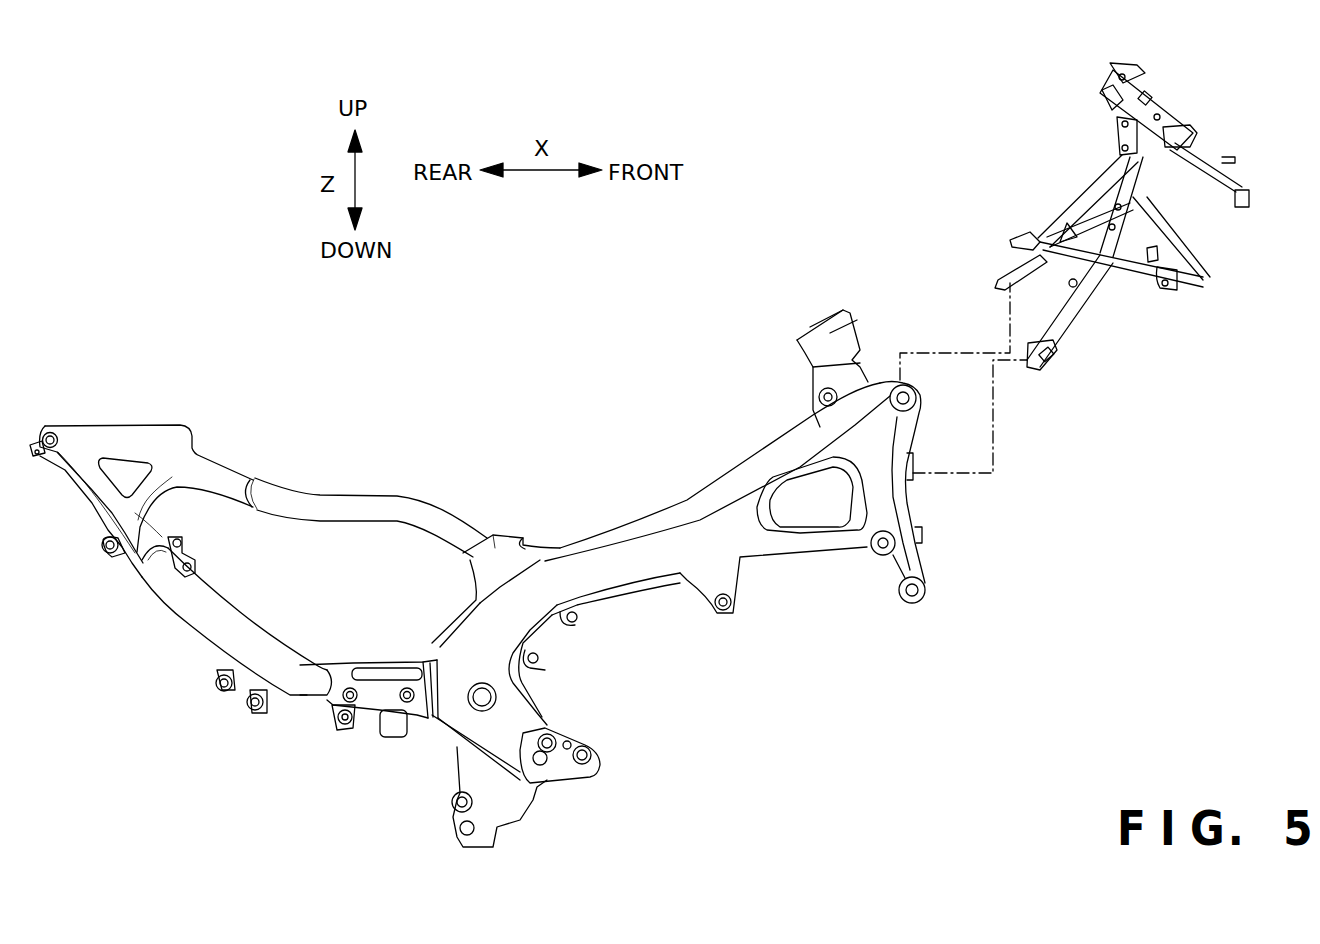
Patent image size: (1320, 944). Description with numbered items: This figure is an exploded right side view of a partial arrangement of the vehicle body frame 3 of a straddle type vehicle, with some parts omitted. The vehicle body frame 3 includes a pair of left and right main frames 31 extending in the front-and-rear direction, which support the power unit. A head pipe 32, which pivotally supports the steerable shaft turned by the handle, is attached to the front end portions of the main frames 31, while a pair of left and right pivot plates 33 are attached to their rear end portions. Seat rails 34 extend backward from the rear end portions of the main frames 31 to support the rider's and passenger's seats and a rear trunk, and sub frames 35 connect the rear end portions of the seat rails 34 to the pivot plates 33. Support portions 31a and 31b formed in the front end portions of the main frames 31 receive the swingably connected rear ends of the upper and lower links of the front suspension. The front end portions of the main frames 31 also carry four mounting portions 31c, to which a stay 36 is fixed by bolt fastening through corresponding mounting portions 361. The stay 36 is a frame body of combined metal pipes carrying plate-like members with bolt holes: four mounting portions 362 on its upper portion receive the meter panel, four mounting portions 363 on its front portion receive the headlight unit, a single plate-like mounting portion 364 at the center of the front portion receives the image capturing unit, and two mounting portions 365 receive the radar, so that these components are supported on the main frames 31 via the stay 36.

The vehicle body frame 3 is at (972, 650).
The main frame 31 is at (706, 488).
The support portion 31a is at (913, 405).
The support portion 31b is at (878, 555).
The mounting portion 31c is at (899, 380).
The head pipe 32 is at (800, 322).
The pivot plate 33 is at (510, 697).
The seat rail 34 is at (352, 495).
The sub frame 35 is at (205, 647).
The stay 36 is at (1135, 352).
The mounting portion 361 is at (1003, 285).
The mounting portion 362 is at (1103, 72).
The mounting portion 363 is at (1167, 150).
The plate-like mounting portion 364 is at (1231, 157).
The mounting portion 365 is at (1245, 208).